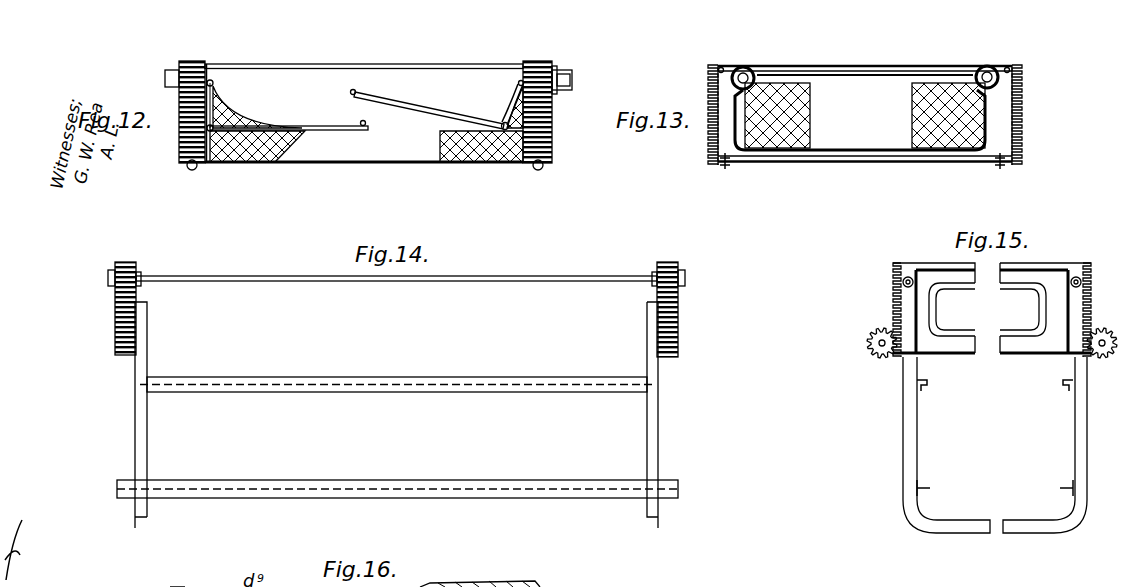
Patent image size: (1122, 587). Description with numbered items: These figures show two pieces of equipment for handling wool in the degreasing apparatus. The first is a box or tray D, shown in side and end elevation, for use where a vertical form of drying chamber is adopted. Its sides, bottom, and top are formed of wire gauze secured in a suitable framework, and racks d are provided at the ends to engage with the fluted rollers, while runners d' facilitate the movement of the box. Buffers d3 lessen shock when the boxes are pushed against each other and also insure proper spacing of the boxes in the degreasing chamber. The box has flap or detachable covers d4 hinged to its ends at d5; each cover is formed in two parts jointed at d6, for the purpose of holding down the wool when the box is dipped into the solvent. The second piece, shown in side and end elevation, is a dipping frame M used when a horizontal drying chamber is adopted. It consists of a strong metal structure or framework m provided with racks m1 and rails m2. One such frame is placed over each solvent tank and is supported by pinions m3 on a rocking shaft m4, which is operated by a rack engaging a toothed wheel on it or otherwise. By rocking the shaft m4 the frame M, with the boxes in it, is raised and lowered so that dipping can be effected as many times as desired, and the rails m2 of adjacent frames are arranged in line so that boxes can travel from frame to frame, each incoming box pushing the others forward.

In FIG. 12, the box or tray D is at (364, 113).
In FIG. 13, the box or tray D is at (865, 114).
In FIG. 12, the rack d is at (347, 112).
In FIG. 13, the rack d is at (859, 115).
In FIG. 12, the runner d' is at (363, 179).
In FIG. 13, the runner d' is at (862, 175).
In FIG. 12, the buffer d3 is at (576, 80).
In FIG. 13, the buffer d3 is at (1040, 80).
In FIG. 12, the flap or detachable cover d4 is at (265, 128).
In FIG. 12, the hinge d5 is at (556, 90).
In FIG. 12, the joint d6 is at (500, 123).
In FIG. 14, the dipping frame M is at (393, 360).
In FIG. 15, the dipping frame M is at (992, 354).
In FIG. 14, the metal structure or framework m is at (141, 470).
In FIG. 15, the metal structure or framework m is at (913, 454).
In FIG. 14, the rack m1 is at (146, 297).
In FIG. 14, the rail m2 is at (332, 491).
In FIG. 15, the rail m2 is at (931, 489).
In FIG. 15, the pinion m3 is at (867, 346).
In FIG. 15, the rocking shaft m4 is at (879, 350).